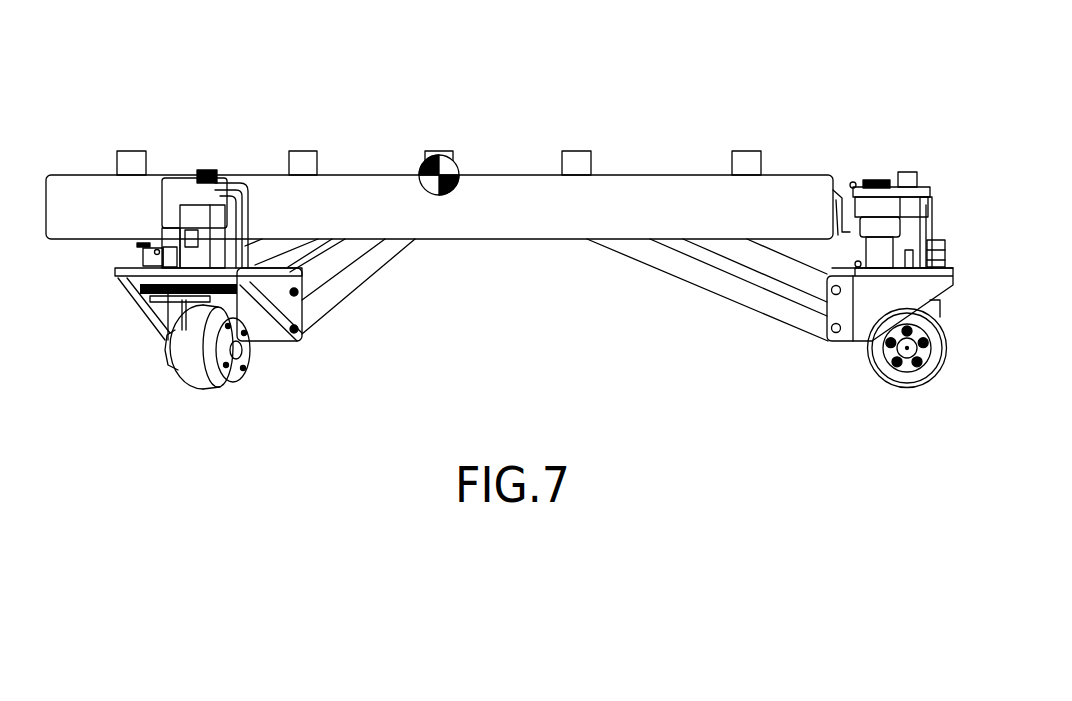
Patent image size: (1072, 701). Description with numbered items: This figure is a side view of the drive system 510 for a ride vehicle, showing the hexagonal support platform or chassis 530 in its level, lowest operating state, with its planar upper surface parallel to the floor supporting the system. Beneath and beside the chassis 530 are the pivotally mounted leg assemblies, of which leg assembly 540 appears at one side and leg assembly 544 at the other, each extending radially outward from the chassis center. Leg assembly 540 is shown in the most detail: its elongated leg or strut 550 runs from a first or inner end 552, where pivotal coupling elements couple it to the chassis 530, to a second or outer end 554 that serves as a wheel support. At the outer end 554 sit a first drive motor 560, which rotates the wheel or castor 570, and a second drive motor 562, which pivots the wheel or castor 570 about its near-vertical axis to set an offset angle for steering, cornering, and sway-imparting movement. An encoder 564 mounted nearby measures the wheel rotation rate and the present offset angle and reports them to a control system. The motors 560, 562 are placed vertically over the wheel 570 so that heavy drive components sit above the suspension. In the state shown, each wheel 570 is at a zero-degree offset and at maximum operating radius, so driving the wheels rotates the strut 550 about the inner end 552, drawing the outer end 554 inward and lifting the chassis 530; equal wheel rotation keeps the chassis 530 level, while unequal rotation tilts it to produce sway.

The drive system 510 is at (728, 66).
The hexagonal support platform or chassis 530 is at (369, 150).
The leg assembly 540 is at (974, 141).
The leg assembly 544 is at (246, 401).
The leg or strut 550 is at (641, 297).
The first or inner end 552 is at (597, 241).
The second or outer end 554 is at (945, 278).
The first drive motor 560 is at (910, 172).
The second drive motor 562 is at (878, 180).
The encoder 564 is at (947, 252).
The wheel or castor 570 is at (964, 333).